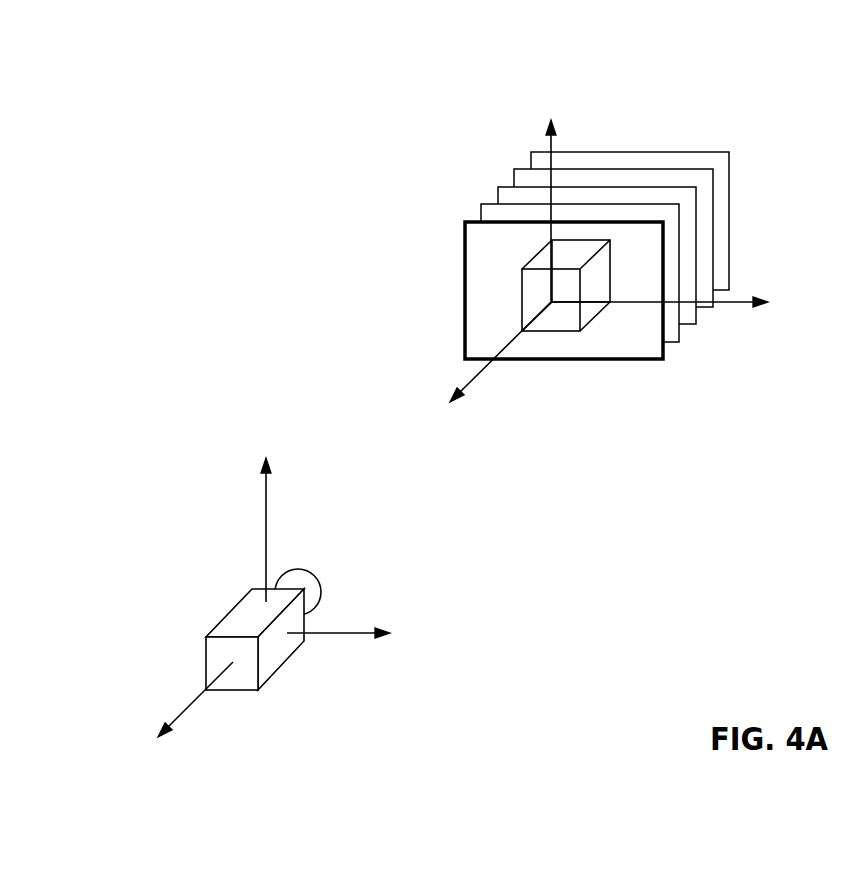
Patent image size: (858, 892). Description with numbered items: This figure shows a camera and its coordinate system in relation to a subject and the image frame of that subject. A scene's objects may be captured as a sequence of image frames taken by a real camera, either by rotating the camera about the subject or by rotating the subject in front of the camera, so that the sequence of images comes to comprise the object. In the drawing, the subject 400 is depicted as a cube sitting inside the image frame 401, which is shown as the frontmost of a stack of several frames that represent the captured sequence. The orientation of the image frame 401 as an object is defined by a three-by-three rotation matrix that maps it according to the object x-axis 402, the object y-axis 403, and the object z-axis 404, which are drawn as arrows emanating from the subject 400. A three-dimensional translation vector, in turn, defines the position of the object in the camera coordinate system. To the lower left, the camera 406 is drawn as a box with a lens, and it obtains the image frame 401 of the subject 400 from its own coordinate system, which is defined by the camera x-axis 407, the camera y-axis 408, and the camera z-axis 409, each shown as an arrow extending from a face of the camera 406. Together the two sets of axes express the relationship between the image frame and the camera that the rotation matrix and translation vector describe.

The subject 400 is at (566, 331).
The image frame 401 is at (559, 255).
The object x-axis 402 is at (694, 303).
The object y-axis 403 is at (552, 164).
The object z-axis 404 is at (484, 402).
The camera 406 is at (237, 626).
The camera x-axis 407 is at (378, 635).
The camera y-axis 408 is at (163, 749).
The camera z-axis 409 is at (266, 483).